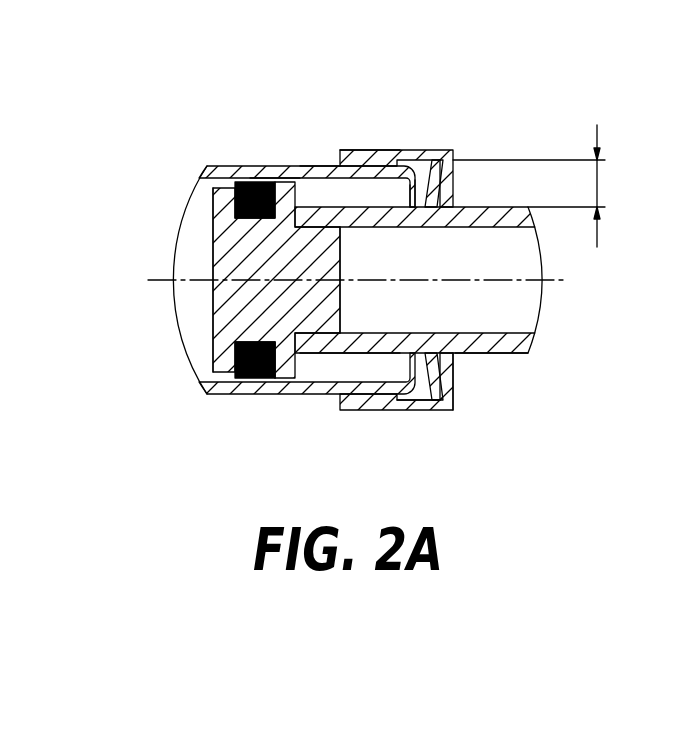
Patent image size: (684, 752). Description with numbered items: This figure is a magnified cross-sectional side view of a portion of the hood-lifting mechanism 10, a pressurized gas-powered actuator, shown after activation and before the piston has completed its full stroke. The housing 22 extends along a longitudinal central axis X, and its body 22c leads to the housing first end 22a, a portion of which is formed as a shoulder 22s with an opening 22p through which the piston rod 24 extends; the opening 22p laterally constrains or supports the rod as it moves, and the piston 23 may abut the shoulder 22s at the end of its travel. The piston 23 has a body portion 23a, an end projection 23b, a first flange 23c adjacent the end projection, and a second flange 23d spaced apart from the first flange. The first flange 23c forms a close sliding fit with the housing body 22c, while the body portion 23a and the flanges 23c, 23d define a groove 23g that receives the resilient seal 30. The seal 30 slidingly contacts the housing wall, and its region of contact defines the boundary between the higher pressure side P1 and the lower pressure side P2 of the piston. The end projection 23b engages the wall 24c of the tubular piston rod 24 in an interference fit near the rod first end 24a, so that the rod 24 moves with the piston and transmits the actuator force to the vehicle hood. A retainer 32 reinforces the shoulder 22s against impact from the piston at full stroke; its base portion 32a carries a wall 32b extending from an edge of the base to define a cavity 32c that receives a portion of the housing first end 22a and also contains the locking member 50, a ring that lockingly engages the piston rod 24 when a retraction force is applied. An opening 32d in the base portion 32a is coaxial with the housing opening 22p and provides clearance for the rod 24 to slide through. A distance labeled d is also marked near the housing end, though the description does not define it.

The hood-lifting mechanism 10 is at (77, 140).
The housing 22 is at (198, 160).
The housing first end 22a is at (323, 166).
The housing body 22c is at (293, 177).
The shoulder 22s is at (437, 166).
The opening 22p is at (417, 182).
The piston 23 is at (215, 257).
The body portion 23a is at (253, 305).
The end projection 23b is at (335, 330).
The first flange 23c is at (278, 376).
The second flange 23d is at (227, 358).
The groove 23g is at (336, 300).
The piston rod 24 is at (517, 353).
The piston rod first end 24a is at (345, 352).
The piston rod wall 24c is at (495, 353).
The seal 30 is at (253, 180).
The retainer 32 is at (398, 150).
The base portion 32a is at (452, 153).
The retainer wall 32b is at (360, 150).
The cavity 32c is at (410, 398).
The retainer opening 32d is at (455, 358).
The locking member 50 is at (446, 397).
The higher pressure side P1 is at (197, 342).
The lower pressure side P2 is at (330, 192).
The longitudinal central axis X is at (185, 280).
The distance d is at (537, 186).